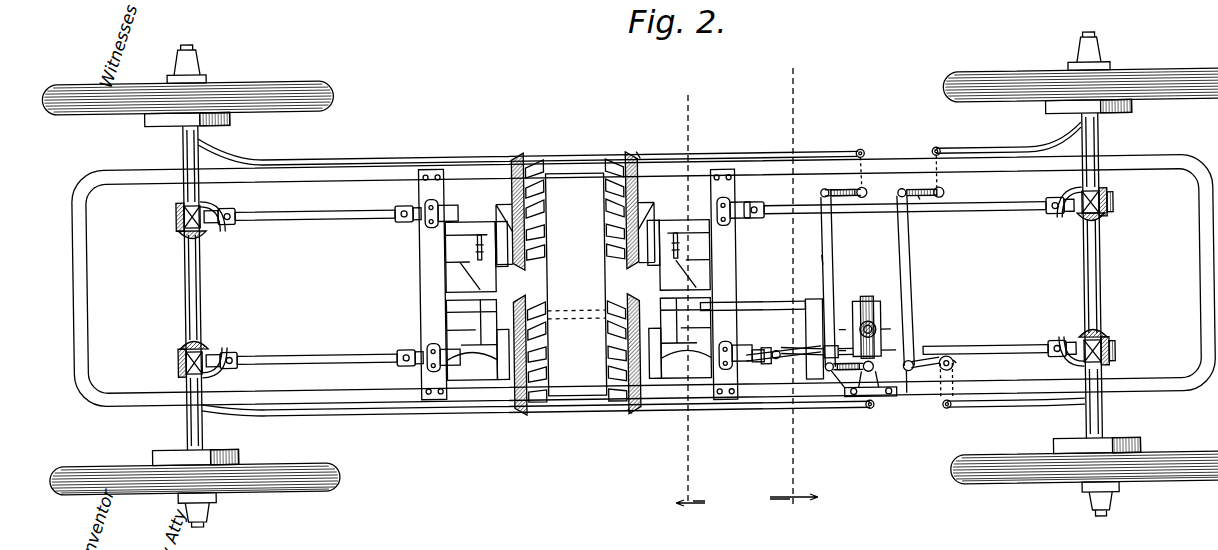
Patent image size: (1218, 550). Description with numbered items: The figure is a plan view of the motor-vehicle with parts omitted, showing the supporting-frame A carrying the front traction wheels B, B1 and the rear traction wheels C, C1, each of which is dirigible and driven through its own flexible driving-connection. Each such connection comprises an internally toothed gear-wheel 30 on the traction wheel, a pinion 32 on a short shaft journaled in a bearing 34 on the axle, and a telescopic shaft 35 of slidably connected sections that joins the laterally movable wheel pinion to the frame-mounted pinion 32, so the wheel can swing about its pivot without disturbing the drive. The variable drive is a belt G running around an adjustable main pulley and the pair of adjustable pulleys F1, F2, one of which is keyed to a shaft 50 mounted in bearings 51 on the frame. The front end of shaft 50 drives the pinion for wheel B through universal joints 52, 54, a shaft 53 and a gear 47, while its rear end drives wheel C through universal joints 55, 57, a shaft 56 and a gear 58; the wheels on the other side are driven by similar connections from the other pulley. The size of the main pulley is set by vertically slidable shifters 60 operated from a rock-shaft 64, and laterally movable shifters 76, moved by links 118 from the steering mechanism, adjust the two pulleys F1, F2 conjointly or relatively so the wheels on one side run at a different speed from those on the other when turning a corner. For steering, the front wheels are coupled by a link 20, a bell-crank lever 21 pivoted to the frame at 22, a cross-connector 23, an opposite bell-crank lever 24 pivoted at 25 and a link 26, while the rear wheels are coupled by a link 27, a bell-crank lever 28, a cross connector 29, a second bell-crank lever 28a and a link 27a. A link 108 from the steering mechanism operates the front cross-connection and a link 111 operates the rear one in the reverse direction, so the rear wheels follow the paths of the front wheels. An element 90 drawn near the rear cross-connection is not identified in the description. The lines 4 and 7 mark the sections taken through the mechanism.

The gear-wheel 30 is at (145, 115).
The telescopic shaft 35 is at (183, 149).
The pinion 32 is at (173, 199).
The gear 58 is at (206, 227).
The bearing 34 is at (228, 373).
The shaft 56 is at (316, 216).
The universal joint 57 is at (233, 206).
The universal joint 55 is at (399, 203).
The link 27 is at (444, 167).
The bearings 51 is at (425, 227).
The universal joint 52 is at (757, 201).
The bell-crank lever 28 is at (844, 190).
The bell-crank lever 28a is at (878, 395).
The link 20 is at (1004, 152).
The link 26 is at (996, 413).
The pivot 22 is at (948, 195).
The link 111 is at (838, 259).
The link 108 is at (911, 270).
The cross connector 29 is at (822, 265).
The cross-connector 23 is at (912, 305).
The shaft 53 is at (991, 218).
The bell-crank lever 21 is at (921, 204).
The universal joint 54 is at (1051, 222).
The gear 47 is at (1116, 211).
The bell-crank lever 24 is at (934, 354).
The pivot 25 is at (952, 368).
The belt G is at (576, 284).
The shaft 50 is at (494, 153).
The adjustable pulley F1 is at (640, 154).
The adjustable pulley F2 is at (628, 414).
The shifters 60 is at (445, 285).
The shifter 76 is at (477, 241).
The link 118 is at (578, 339).
The rock-shaft 64 is at (762, 305).
The worm gear 90 is at (845, 306).
The link 27a is at (788, 407).
The section line 7 is at (690, 300).
The section line 4 is at (794, 292).
The supporting-frame A is at (360, 177).
The front traction wheel B is at (1183, 72).
The front traction wheel B1 is at (1184, 490).
The rear traction wheel C is at (291, 74).
The rear traction wheel C1 is at (268, 490).